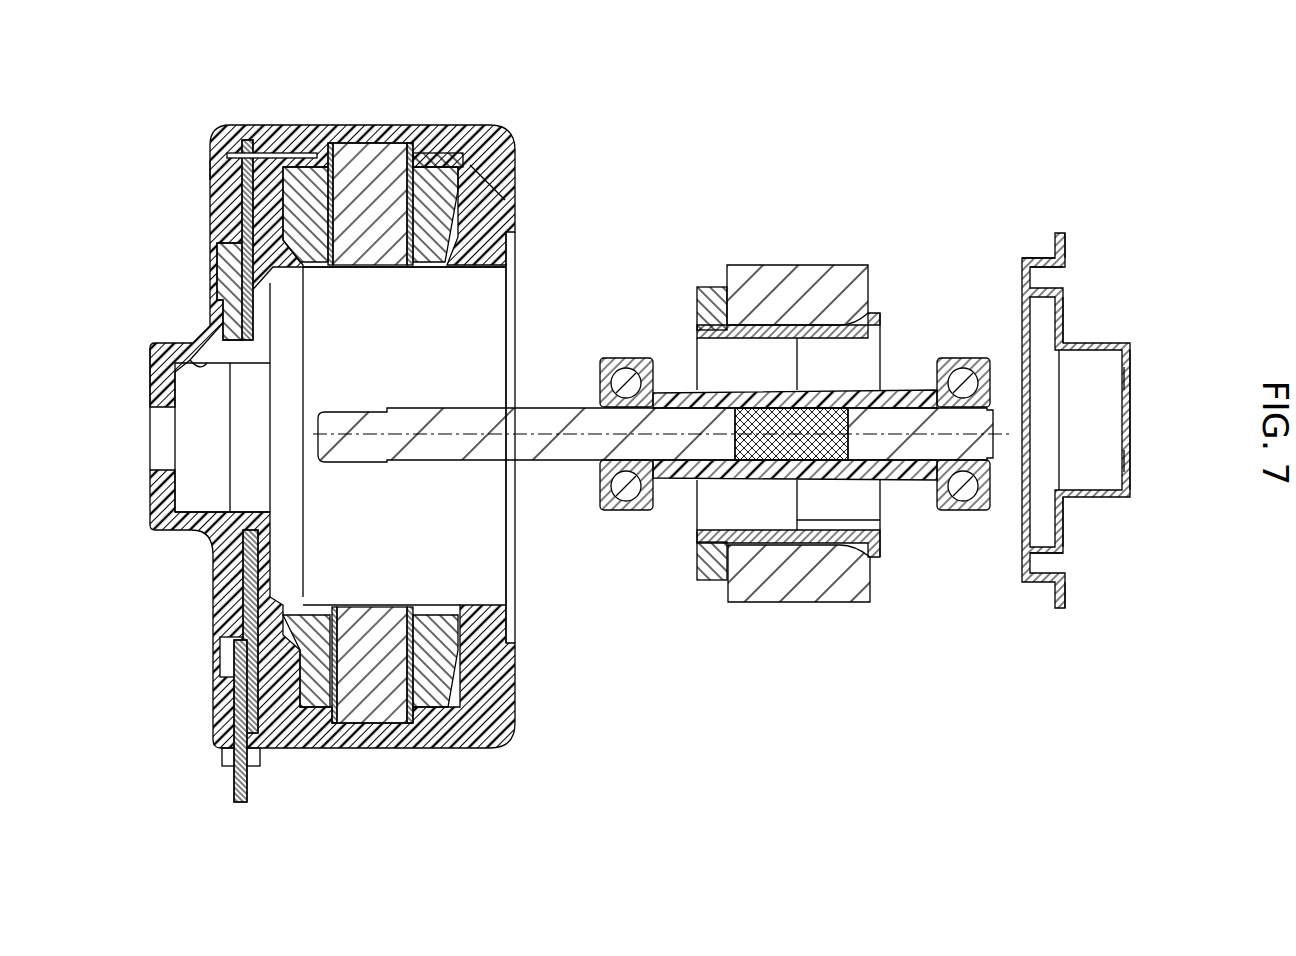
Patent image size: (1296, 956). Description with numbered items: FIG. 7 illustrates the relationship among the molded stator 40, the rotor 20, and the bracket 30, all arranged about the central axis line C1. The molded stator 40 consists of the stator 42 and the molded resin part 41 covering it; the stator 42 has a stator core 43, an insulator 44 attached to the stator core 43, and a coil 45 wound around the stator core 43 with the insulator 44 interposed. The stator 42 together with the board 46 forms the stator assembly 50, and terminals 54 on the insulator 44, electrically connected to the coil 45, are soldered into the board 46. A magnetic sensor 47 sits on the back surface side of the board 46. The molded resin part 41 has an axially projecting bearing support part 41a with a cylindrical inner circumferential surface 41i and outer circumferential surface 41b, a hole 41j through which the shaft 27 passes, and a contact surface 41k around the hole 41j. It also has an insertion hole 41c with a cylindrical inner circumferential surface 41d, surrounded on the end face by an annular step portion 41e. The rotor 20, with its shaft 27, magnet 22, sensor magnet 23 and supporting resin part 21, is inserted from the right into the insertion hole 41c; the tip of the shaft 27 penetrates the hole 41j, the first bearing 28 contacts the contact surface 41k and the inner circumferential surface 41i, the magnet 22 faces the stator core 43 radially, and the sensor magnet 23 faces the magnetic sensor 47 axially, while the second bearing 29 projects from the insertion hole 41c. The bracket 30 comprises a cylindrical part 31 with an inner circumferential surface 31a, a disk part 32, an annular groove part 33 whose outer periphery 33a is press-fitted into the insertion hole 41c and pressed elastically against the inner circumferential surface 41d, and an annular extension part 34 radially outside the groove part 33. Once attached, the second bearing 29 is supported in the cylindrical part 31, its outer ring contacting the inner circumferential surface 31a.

The rotor 20 is at (874, 246).
The resin part 21 is at (675, 480).
The magnet 22 is at (798, 280).
The sensor magnet 23 is at (697, 303).
The shaft 27 is at (430, 410).
The first bearing 28 is at (630, 366).
The second bearing 29 is at (960, 366).
The bracket 30 is at (1150, 287).
The cylindrical part 31 is at (1120, 505).
The inner circumferential surface 31a is at (1130, 350).
The disk part 32 is at (1065, 307).
The groove part 33 is at (1072, 276).
The outer periphery 33a is at (1040, 255).
The annular extension part 34 is at (1066, 240).
The molded stator 40 is at (203, 170).
The molded resin part 41 is at (490, 196).
The bearing support part 41a is at (163, 366).
The outer circumferential surface 41b is at (176, 341).
The insertion hole 41c is at (468, 493).
The inner circumferential surface 41d is at (480, 268).
The annular step portion 41e is at (510, 258).
The inner circumferential surface 41i is at (190, 360).
The hole 41j is at (165, 468).
The contact surface 41k is at (182, 500).
The stator 42 is at (478, 186).
The stator core 43 is at (375, 170).
The insulator 44 is at (432, 175).
The coil 45 is at (500, 662).
The board 46 is at (250, 617).
The magnetic sensor 47 is at (257, 566).
The stator assembly 50 is at (212, 196).
The terminals 54 is at (228, 153).
The central axis line C1 is at (398, 440).